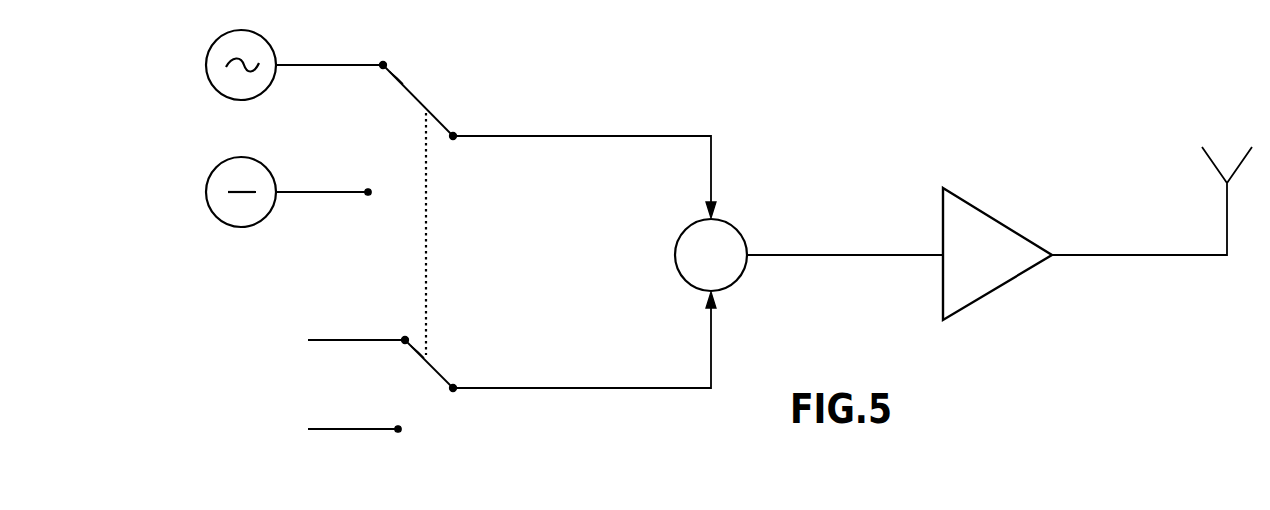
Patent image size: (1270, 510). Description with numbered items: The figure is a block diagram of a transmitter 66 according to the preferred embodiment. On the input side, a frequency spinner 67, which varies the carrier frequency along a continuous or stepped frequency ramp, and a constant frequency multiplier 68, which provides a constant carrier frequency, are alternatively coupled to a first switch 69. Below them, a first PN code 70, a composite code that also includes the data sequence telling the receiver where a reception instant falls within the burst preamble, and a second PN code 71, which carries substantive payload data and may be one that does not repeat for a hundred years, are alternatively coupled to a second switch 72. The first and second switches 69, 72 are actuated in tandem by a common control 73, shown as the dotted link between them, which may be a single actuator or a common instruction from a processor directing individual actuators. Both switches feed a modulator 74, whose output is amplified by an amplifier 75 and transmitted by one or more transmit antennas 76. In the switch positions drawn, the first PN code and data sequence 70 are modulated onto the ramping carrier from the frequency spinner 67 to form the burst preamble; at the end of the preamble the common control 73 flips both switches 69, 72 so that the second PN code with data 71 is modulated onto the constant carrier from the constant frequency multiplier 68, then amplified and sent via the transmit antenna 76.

The transmitter 66 is at (953, 81).
The frequency spinner 67 is at (207, 63).
The constant frequency multiplier 68 is at (207, 190).
The first switch 69 is at (412, 90).
The first PN code 70 is at (350, 340).
The second PN code 71 is at (350, 429).
The second switch 72 is at (440, 368).
The common control 73 is at (428, 238).
The modulator 74 is at (600, 262).
The amplifier 75 is at (899, 254).
The transmit antenna 76 is at (1210, 158).